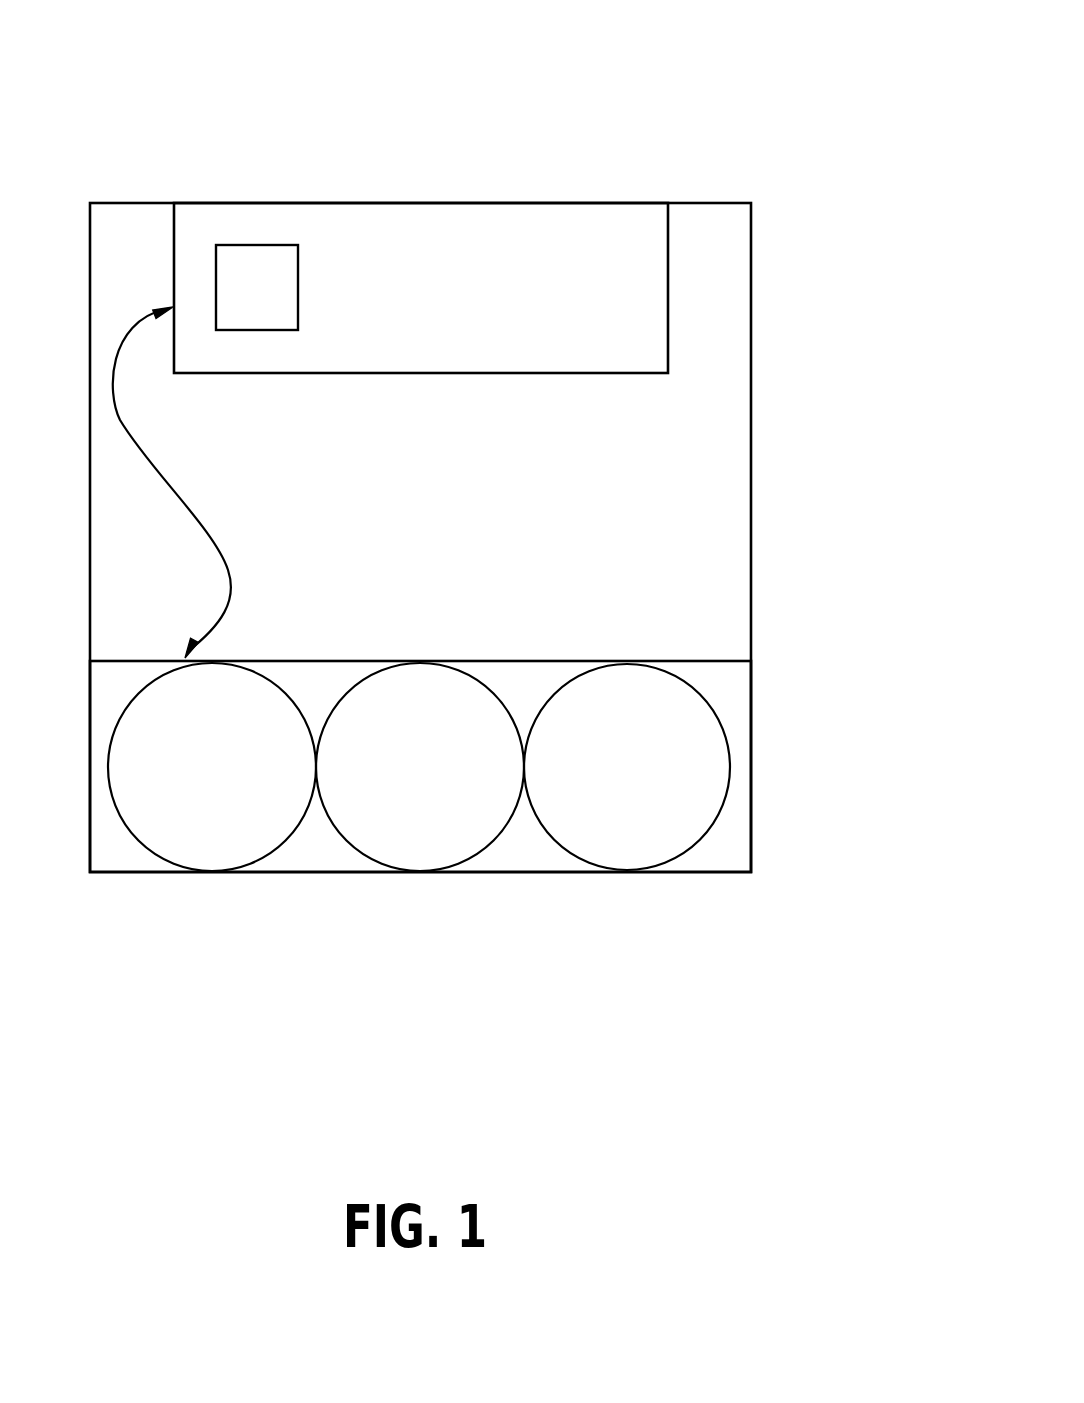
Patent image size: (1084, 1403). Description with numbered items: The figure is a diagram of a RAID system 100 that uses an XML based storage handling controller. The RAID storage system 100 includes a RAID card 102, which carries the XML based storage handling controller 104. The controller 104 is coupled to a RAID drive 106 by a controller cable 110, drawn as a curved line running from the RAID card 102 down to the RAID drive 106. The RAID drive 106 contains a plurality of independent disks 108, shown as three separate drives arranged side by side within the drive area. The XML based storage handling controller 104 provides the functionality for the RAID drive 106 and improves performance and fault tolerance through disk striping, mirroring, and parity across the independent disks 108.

The RAID system 100 is at (680, 98).
The RAID card 102 is at (586, 259).
The XML based storage handling controller 104 is at (258, 273).
The RAID drive 106 is at (720, 662).
The independent disks 108 is at (607, 832).
The controller cable 110 is at (173, 498).